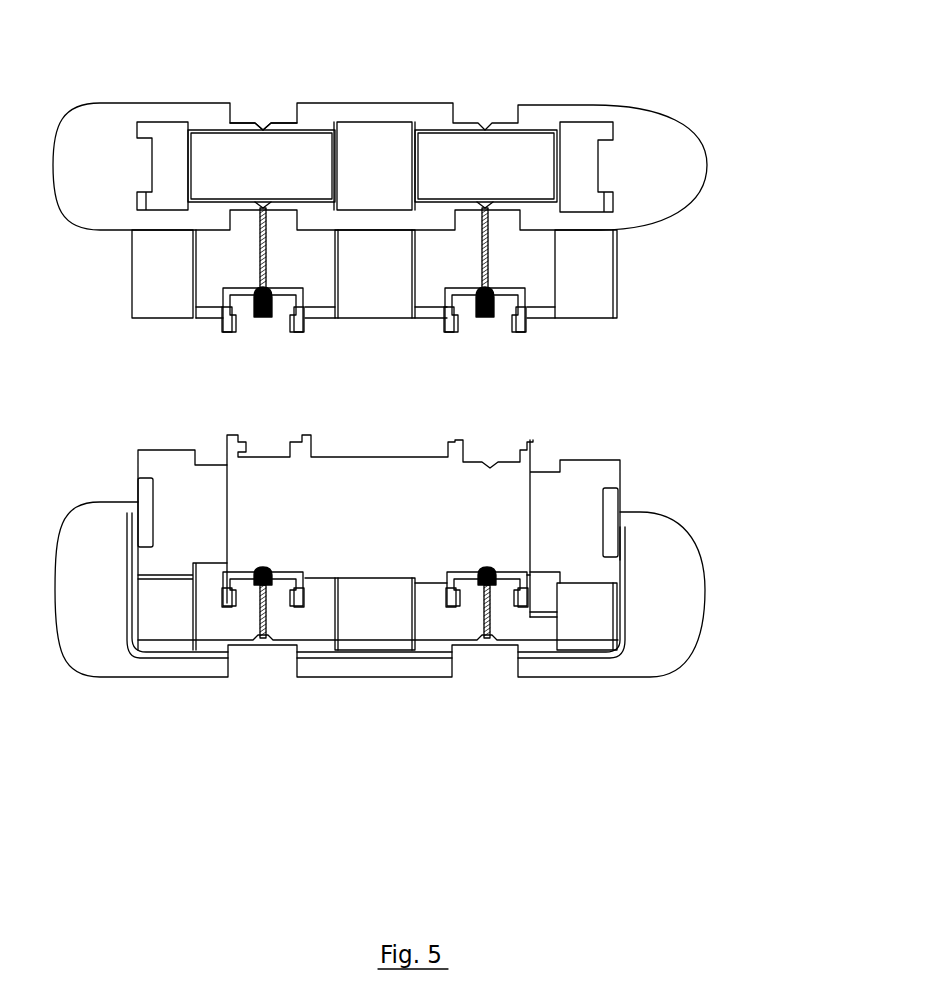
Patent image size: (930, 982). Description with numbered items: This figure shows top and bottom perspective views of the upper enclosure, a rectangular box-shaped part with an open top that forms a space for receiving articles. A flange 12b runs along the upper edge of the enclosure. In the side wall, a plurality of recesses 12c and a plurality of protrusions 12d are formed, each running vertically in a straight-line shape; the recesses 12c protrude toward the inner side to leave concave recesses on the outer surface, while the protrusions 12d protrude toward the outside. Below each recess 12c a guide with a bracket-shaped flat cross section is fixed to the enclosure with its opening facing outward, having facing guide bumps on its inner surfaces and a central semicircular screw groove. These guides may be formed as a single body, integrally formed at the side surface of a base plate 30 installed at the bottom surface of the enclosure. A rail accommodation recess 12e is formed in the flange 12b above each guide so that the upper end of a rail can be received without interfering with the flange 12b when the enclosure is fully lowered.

The flange 12b is at (678, 157).
The recess 12c is at (502, 153).
The protrusion 12d is at (372, 165).
The rail accommodation recess 12e is at (243, 122).
The base plate 30 is at (362, 545).